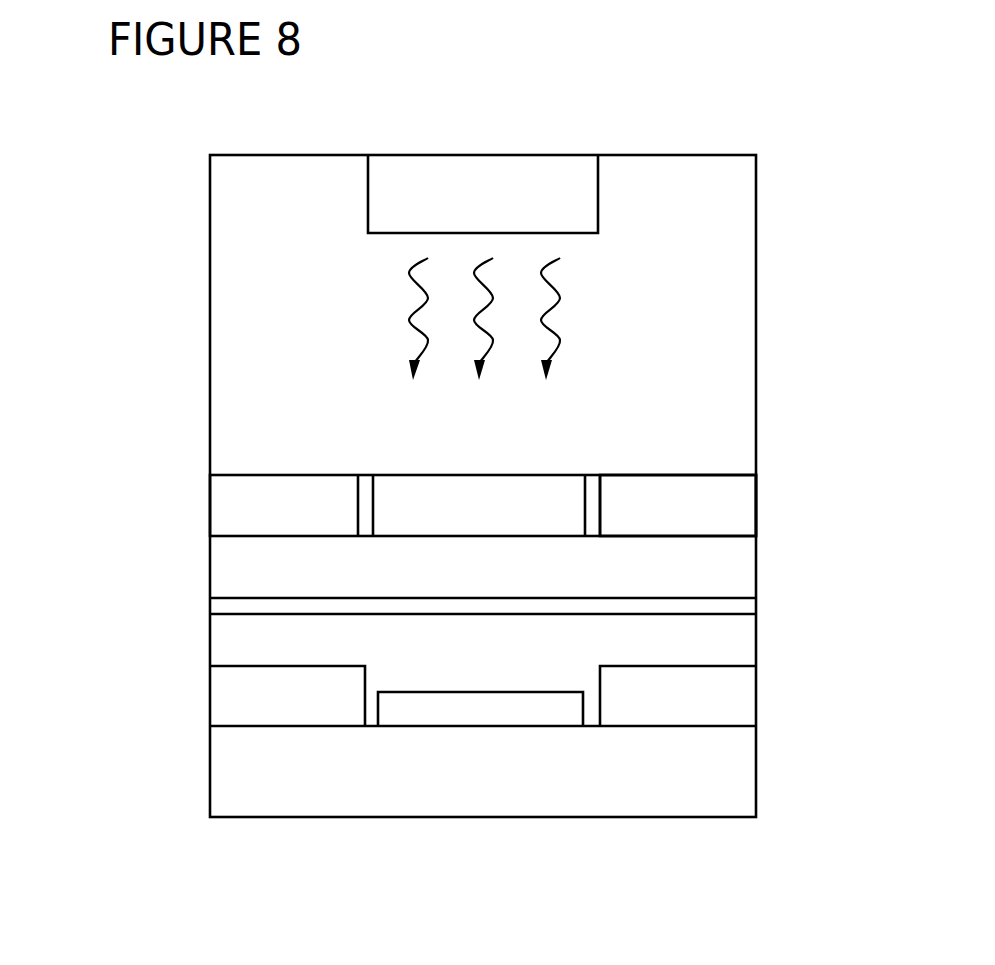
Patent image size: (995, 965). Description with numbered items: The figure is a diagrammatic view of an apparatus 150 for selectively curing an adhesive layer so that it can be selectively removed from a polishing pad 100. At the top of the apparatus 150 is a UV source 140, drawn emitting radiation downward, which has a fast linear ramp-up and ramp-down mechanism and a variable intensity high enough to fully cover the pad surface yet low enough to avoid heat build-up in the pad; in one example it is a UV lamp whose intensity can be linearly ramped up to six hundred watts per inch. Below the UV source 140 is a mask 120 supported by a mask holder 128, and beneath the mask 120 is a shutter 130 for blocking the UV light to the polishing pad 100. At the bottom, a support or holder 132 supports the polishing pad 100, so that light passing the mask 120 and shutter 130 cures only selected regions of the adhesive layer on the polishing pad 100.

The polishing pad 100 is at (496, 723).
The mask 120 is at (488, 523).
The mask holder 128 is at (656, 505).
The shutter 130 is at (567, 597).
The support or holder 132 is at (702, 708).
The UV source 140 is at (486, 212).
The apparatus 150 is at (162, 401).